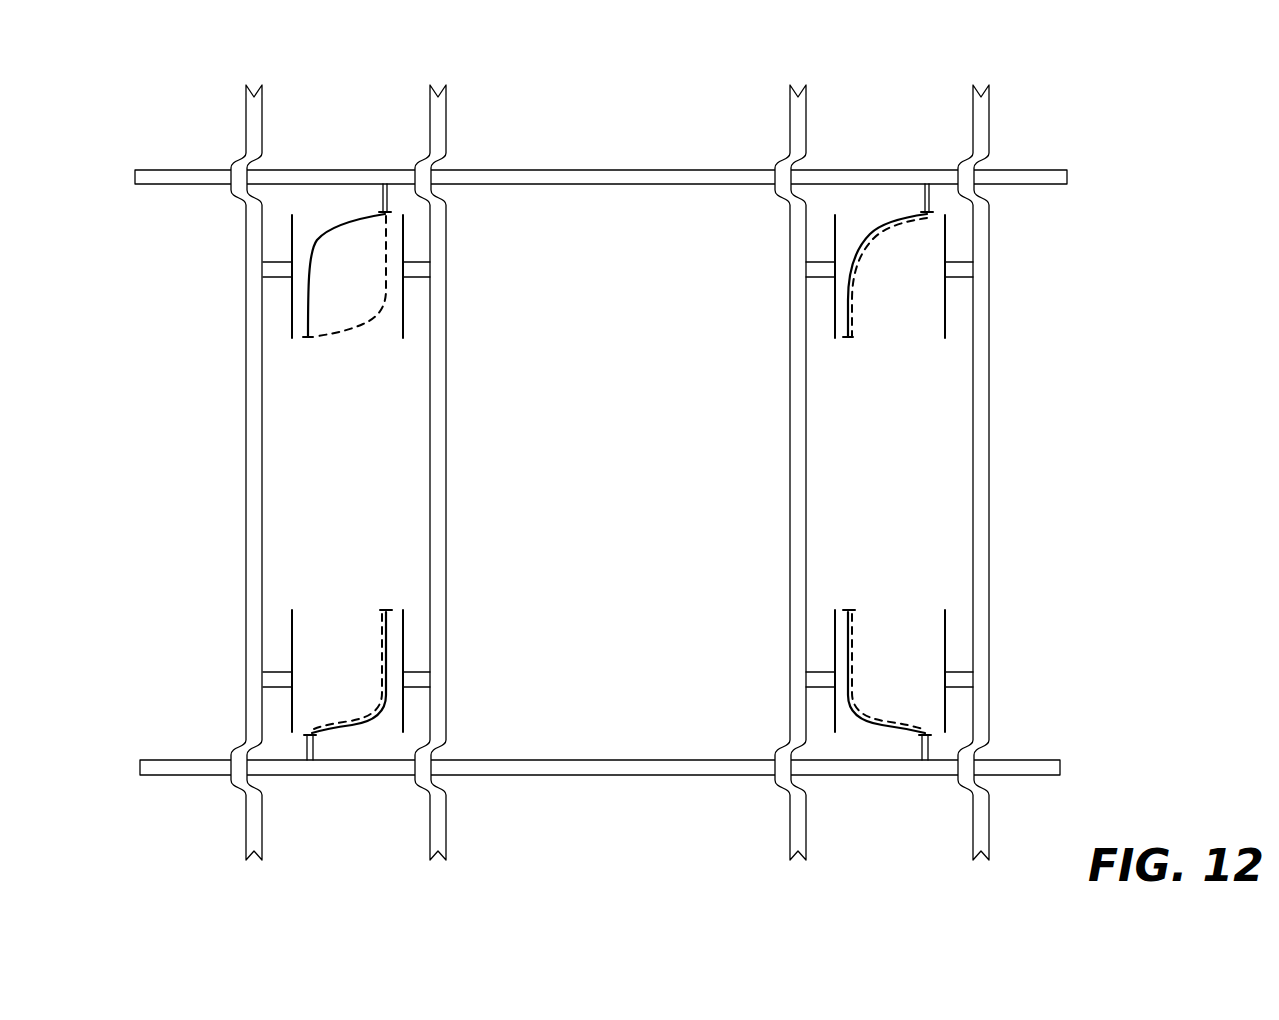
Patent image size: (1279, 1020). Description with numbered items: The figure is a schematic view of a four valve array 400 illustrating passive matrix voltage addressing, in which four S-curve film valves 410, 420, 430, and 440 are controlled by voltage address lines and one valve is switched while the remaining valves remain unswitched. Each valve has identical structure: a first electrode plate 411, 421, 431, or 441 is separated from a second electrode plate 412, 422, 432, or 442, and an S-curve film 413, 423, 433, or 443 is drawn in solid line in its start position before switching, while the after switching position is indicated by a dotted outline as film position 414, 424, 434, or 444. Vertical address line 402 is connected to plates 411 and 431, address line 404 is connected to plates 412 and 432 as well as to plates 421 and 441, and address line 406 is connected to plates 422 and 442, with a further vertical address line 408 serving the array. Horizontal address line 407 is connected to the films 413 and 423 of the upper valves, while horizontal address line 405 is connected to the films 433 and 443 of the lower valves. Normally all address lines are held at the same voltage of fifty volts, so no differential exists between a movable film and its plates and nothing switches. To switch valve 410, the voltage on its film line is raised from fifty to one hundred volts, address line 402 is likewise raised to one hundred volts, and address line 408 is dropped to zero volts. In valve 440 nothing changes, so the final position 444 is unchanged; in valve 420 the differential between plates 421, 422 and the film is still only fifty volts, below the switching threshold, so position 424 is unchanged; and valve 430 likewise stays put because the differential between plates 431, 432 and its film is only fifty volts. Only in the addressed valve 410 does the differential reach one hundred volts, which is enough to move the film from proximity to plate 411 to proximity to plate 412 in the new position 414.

The four valve array 400 is at (1172, 232).
The address line 402 is at (255, 112).
The address line 404 is at (441, 112).
The address line 405 is at (584, 766).
The address line 406 is at (800, 112).
The address line 407 is at (573, 181).
The address line 408 is at (985, 112).
The S-curve film valve 410 is at (537, 257).
The first electrode plate 411 is at (290, 315).
The second electrode plate 412 is at (403, 313).
The S-curve film 413 is at (343, 223).
The after switching position of film 414 is at (353, 323).
The S-curve film valve 420 is at (777, 265).
The first electrode plate 421 is at (833, 312).
The second electrode plate 422 is at (945, 310).
The S-curve film 423 is at (887, 217).
The after switching position of film 424 is at (857, 320).
The S-curve film valve 430 is at (537, 707).
The first electrode plate 431 is at (290, 632).
The second electrode plate 432 is at (401, 632).
The S-curve film 433 is at (348, 727).
The after switching position of film 434 is at (382, 627).
The S-curve film valve 440 is at (777, 678).
The first electrode plate 441 is at (833, 630).
The second electrode plate 442 is at (947, 633).
The S-curve film 443 is at (883, 728).
The after switching position of film 444 is at (857, 628).